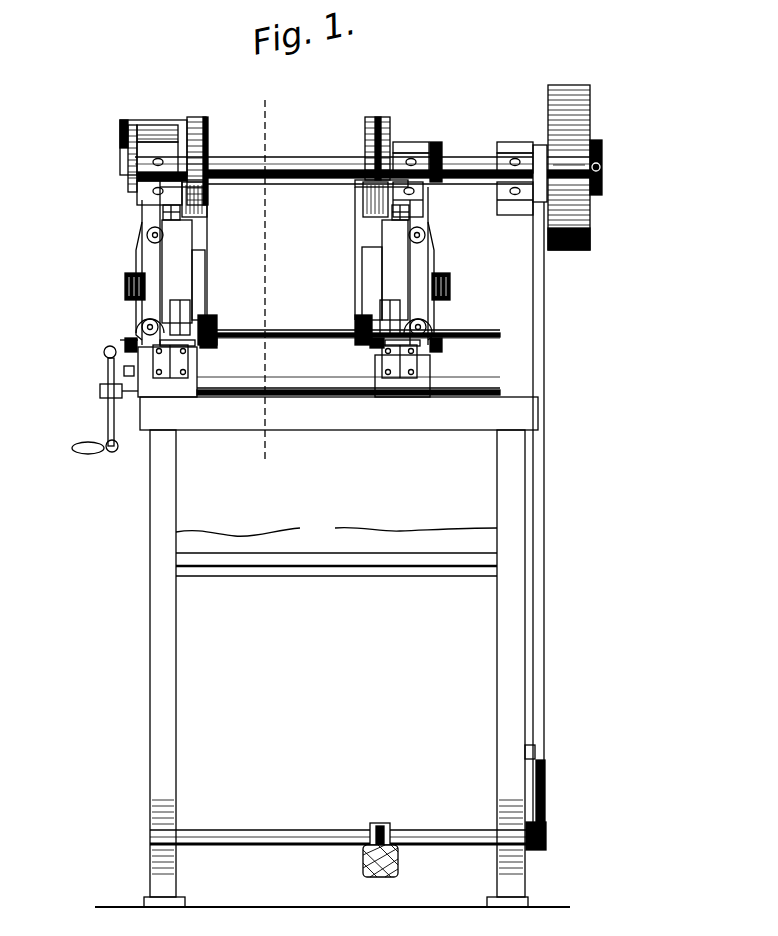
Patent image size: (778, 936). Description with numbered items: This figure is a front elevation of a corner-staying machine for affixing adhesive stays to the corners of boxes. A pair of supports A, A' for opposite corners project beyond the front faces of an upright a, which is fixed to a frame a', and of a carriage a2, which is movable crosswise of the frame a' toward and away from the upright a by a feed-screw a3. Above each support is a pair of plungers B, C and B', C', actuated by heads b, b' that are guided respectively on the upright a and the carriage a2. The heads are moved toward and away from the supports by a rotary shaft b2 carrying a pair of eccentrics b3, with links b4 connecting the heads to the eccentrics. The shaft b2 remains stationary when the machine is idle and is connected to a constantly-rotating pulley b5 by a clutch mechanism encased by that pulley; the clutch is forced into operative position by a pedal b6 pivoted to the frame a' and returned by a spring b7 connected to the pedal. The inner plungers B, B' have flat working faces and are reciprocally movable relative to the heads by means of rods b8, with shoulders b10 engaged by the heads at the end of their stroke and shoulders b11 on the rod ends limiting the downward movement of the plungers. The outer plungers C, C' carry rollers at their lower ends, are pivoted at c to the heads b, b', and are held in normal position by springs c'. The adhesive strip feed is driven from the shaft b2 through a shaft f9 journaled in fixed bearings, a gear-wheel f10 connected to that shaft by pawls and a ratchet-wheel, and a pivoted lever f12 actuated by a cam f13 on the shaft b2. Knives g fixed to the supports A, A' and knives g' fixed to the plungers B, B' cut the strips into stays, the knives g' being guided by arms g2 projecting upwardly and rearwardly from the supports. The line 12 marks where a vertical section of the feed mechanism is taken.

The section line 12 is at (263, 279).
The frame a' is at (332, 652).
The pedal b6 is at (382, 862).
The spring b7 is at (548, 793).
The rotary shaft b2 is at (285, 163).
The constantly-rotating pulley b5 is at (582, 106).
The pivoted lever f12 is at (124, 126).
The eccentric b3 is at (206, 150).
The link b4 is at (207, 200).
The head b is at (196, 264).
The head b' is at (405, 259).
The shoulder b11 is at (458, 196).
The upright a is at (153, 303).
The carriage a2 is at (430, 268).
The pivot c is at (276, 278).
The spring c' is at (284, 274).
The plunger-rod b8 is at (186, 312).
The plunger C is at (134, 321).
The plunger C' is at (434, 314).
The plunger B is at (223, 323).
The plunger B' is at (348, 324).
The shaft f9 is at (300, 332).
The gear-wheel f10 is at (222, 336).
The feed-screw a3 is at (290, 388).
The shoulder b10 is at (214, 345).
The arm g2 is at (190, 345).
The support A is at (170, 381).
The support A' is at (399, 381).
The knife g' is at (282, 340).
The knife g is at (268, 400).
The cam f13 is at (126, 336).